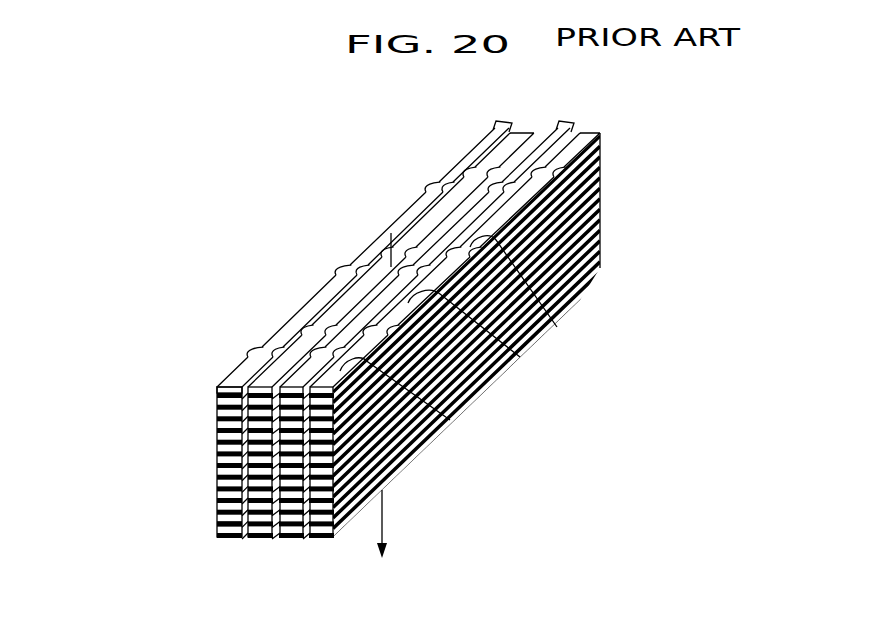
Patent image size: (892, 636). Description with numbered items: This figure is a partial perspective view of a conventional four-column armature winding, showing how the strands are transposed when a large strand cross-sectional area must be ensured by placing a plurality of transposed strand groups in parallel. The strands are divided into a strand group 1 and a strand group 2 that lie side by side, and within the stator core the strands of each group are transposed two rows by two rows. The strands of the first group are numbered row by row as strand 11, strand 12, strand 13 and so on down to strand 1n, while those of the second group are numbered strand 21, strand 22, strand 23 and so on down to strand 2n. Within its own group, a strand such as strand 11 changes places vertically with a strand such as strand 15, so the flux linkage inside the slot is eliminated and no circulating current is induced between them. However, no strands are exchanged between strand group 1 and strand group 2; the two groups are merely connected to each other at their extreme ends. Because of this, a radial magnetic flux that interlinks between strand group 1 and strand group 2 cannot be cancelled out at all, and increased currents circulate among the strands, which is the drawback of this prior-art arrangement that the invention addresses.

The strand group 1 is at (592, 197).
The strand group 2 is at (447, 168).
The strand 11 is at (450, 420).
The strand 12 is at (520, 357).
The strand 13 is at (557, 327).
The strand 15 is at (328, 432).
The strand 21 is at (277, 362).
The strand 22 is at (347, 273).
The strand 23 is at (422, 190).
The strand 1n is at (322, 535).
The strand 2n is at (252, 538).